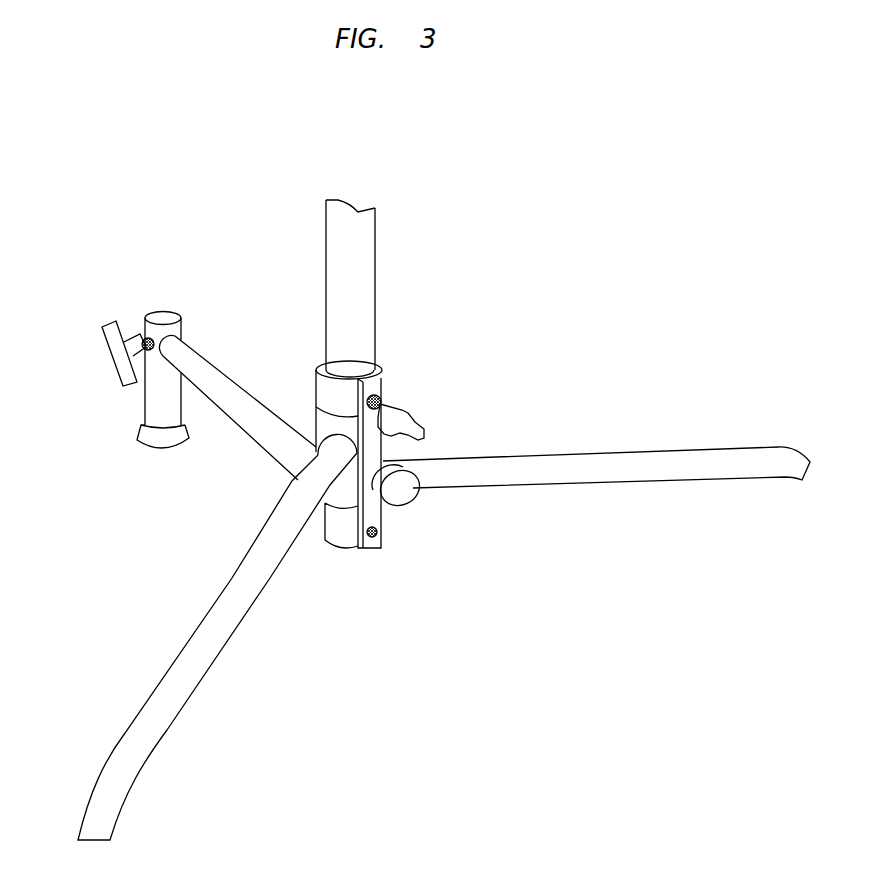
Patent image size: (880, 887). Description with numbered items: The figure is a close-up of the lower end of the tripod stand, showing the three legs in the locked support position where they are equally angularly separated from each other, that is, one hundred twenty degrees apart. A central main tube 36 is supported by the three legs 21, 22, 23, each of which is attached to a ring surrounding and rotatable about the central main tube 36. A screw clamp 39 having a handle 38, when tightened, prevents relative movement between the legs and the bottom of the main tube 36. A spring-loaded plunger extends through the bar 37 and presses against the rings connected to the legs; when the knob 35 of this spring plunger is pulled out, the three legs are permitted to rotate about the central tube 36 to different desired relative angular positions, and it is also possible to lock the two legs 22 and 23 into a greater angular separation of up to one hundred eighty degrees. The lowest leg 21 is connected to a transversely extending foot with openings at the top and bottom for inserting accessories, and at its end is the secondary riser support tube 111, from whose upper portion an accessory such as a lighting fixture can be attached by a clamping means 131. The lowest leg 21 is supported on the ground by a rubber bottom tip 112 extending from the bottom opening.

The central main tube 36 is at (378, 271).
The screw clamp 39 is at (385, 368).
The handle 38 is at (411, 412).
The knob 35 is at (398, 500).
The bar 37 is at (374, 548).
The leg 22 is at (569, 456).
The lowest leg 21 is at (254, 437).
The leg 23 is at (254, 607).
The secondary riser support tube 111 is at (144, 397).
The rubber bottom tip 112 is at (152, 452).
The clamping means 131 is at (105, 362).